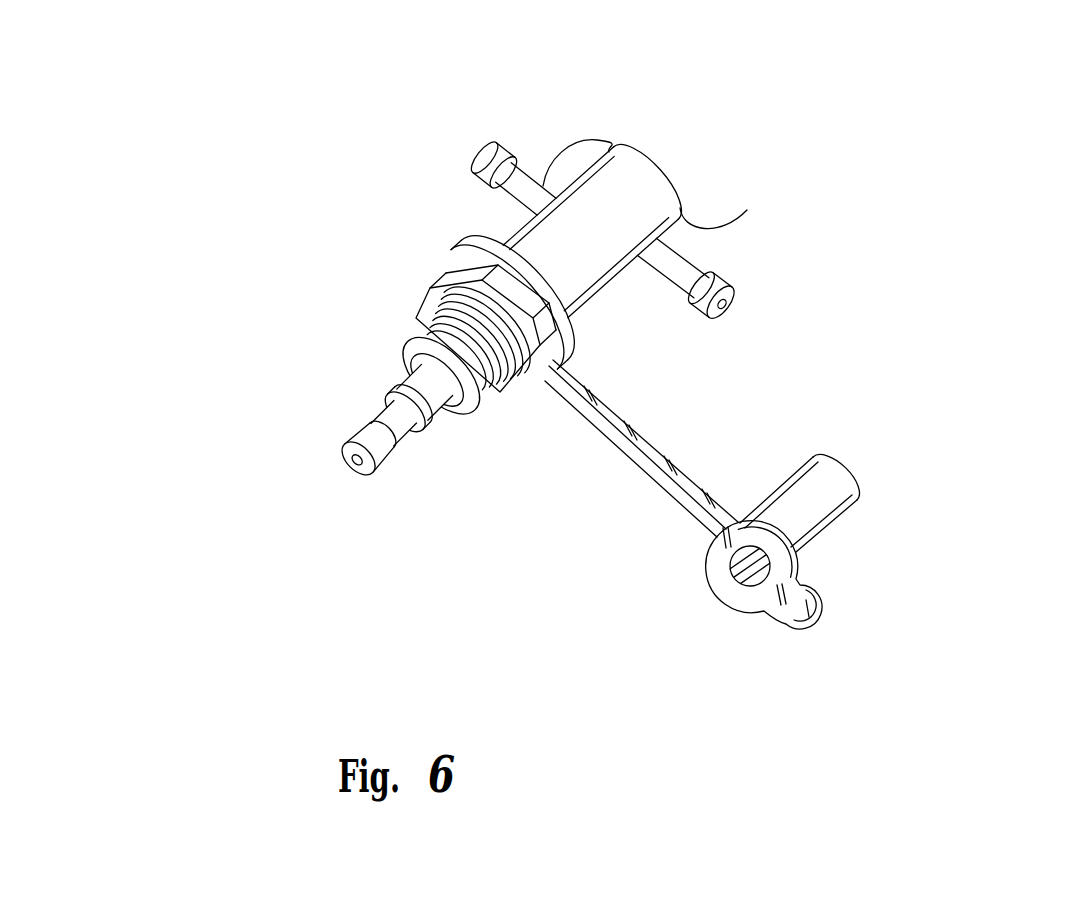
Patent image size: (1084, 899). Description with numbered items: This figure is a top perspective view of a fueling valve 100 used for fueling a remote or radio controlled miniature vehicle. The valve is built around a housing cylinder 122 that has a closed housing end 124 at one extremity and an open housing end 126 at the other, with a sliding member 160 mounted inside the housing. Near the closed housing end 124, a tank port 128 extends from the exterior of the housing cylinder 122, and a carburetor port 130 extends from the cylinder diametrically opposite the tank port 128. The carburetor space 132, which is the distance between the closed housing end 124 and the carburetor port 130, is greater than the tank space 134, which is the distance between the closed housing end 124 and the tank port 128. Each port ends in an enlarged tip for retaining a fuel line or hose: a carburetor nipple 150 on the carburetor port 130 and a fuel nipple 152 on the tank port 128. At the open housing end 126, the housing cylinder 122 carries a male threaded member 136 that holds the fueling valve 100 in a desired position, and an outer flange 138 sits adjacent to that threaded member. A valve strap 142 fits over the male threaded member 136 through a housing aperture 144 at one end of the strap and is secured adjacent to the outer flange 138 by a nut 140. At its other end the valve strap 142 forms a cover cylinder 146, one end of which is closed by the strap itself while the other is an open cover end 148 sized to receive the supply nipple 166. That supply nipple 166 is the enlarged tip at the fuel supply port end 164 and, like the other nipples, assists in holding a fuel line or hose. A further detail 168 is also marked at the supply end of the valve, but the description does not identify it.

The fueling valve 100 is at (253, 250).
The housing cylinder 122 is at (618, 166).
The closed housing end 124 is at (672, 168).
The open housing end 126 is at (408, 351).
The tank port 128 is at (730, 314).
The carburetor port 130 is at (480, 147).
The carburetor space 132 is at (567, 141).
The tank space 134 is at (738, 203).
The male threaded member 136 is at (490, 390).
The outer flange 138 is at (487, 256).
The nut 140 is at (617, 451).
The valve strap 142 is at (430, 292).
The housing aperture 144 is at (556, 359).
The cover cylinder 146 is at (818, 518).
The open cover end 148 is at (742, 574).
The carburetor nipple 150 is at (500, 143).
The fuel nipple 152 is at (738, 286).
The sliding member 160 is at (413, 437).
The fuel supply port end 164 is at (363, 474).
The supply nipple 166 is at (343, 443).
The tip opening 168 is at (350, 462).